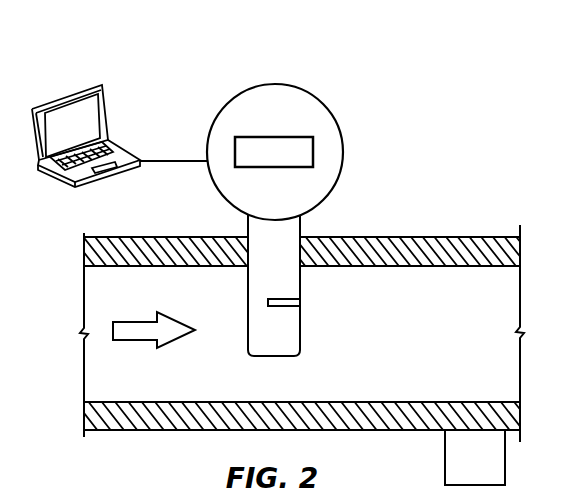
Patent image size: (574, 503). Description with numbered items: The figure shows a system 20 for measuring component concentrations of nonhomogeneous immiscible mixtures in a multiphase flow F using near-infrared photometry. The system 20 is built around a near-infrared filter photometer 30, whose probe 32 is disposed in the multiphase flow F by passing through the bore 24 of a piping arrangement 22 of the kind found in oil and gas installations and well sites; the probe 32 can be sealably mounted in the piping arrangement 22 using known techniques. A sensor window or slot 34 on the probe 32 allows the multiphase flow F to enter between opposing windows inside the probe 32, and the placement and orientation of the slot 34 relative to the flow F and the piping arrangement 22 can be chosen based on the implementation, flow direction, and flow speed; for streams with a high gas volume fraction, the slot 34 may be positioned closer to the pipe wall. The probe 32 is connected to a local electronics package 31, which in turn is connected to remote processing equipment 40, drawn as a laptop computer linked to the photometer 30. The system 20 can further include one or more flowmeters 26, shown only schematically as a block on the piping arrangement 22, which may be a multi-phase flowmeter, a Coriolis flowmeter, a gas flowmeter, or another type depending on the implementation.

The system 20 is at (269, 203).
The piping arrangement 22 is at (410, 238).
The bore 24 is at (368, 268).
The flowmeter 26 is at (475, 457).
The near-infrared filter photometer 30 is at (303, 214).
The local electronics package 31 is at (343, 128).
The probe 32 is at (300, 356).
The sensor window or slot 34 is at (300, 300).
The remote processing equipment 40 is at (60, 92).
The multiphase flow F is at (157, 348).